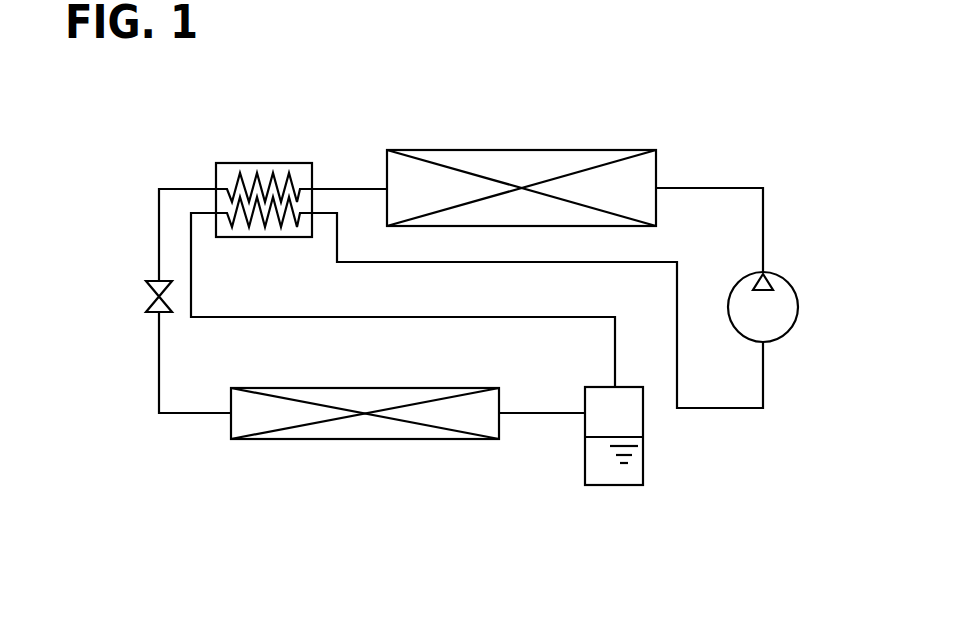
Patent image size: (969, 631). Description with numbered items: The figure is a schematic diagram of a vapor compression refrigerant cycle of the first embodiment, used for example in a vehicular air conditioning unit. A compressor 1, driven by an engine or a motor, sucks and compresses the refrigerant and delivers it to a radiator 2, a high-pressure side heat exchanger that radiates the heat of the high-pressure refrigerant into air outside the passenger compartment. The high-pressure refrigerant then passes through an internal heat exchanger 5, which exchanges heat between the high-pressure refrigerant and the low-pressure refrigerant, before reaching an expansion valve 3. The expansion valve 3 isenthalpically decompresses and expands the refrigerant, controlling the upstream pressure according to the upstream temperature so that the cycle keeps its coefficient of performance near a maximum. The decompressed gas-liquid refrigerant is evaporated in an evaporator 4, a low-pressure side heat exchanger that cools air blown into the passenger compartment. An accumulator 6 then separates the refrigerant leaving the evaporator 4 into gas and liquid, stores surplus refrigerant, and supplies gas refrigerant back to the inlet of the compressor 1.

The compressor 1 is at (799, 305).
The radiator 2 is at (602, 150).
The expansion valve 3 is at (146, 298).
The evaporator 4 is at (457, 440).
The internal heat exchanger 5 is at (266, 163).
The accumulator 6 is at (643, 460).